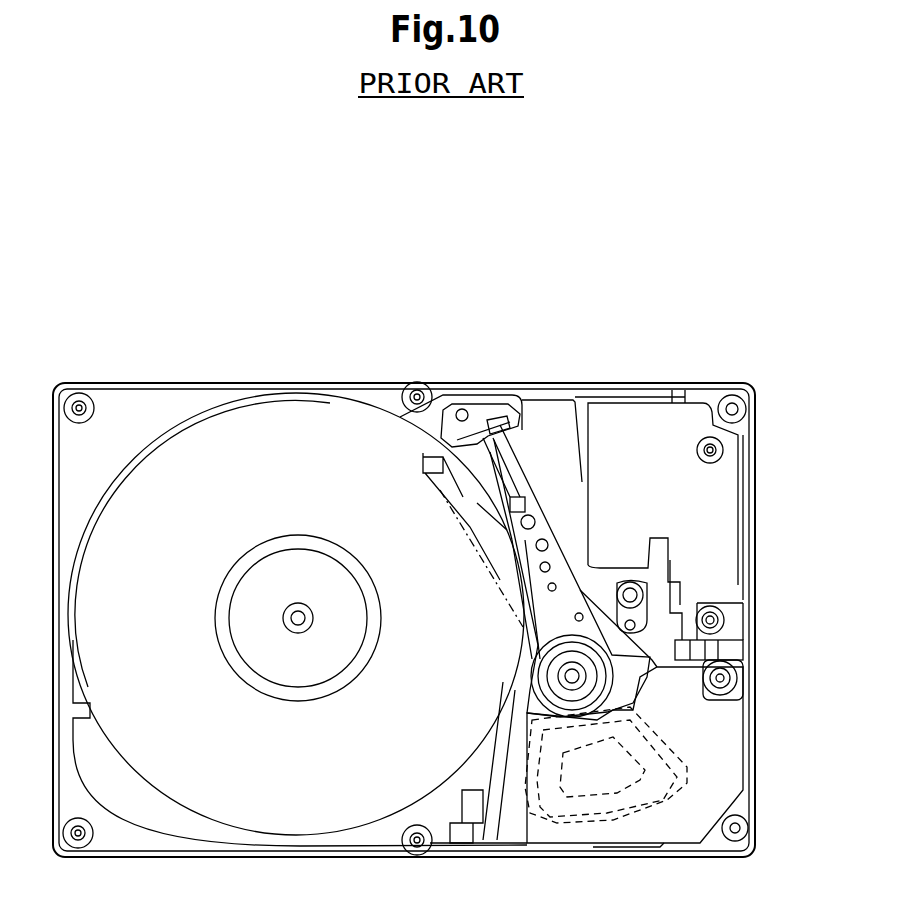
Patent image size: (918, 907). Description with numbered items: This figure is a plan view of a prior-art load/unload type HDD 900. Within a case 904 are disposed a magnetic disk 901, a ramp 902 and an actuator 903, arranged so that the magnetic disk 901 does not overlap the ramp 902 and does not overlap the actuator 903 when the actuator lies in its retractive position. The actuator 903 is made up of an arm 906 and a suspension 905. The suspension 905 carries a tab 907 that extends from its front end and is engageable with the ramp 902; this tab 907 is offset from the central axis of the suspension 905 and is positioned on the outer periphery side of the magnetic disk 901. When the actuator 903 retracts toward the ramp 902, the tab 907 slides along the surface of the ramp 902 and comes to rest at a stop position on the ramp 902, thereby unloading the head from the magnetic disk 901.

The HDD 900 is at (402, 350).
The magnetic disk 901 is at (303, 408).
The ramp 902 is at (513, 402).
The actuator 903 is at (553, 512).
The case 904 is at (185, 393).
The suspension 905 is at (533, 482).
The arm 906 is at (555, 560).
The tab 907 is at (502, 427).